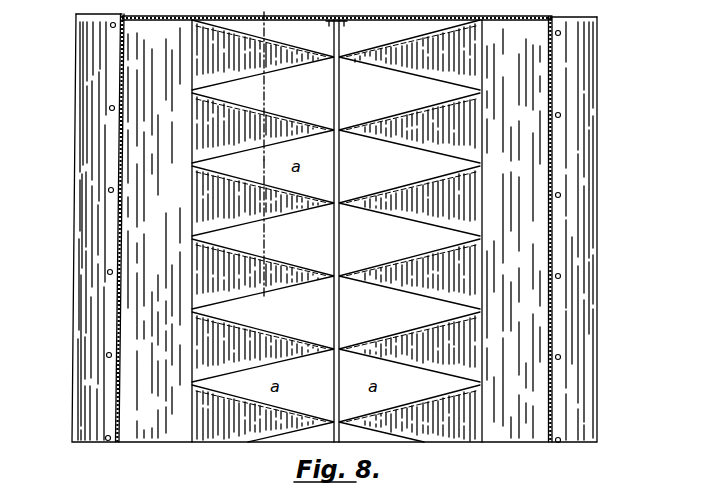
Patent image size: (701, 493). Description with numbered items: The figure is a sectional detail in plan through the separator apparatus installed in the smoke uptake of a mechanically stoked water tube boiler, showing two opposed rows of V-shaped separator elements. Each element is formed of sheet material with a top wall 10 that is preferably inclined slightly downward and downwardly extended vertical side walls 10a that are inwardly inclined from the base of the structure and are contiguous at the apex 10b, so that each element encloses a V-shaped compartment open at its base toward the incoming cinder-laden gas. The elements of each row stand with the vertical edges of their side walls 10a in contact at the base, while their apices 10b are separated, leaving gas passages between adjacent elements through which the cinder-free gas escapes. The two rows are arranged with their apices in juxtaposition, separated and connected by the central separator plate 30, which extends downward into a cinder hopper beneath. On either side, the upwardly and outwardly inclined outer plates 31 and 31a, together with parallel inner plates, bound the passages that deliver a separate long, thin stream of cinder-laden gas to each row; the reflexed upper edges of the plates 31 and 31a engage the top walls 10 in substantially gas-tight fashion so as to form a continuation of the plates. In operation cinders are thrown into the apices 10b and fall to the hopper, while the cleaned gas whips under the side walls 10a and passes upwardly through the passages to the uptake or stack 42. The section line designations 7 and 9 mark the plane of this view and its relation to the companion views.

The section line 7 is at (258, 80).
The section line 9 is at (256, 239).
The top wall 10 is at (405, 132).
The side walls 10a is at (380, 218).
The apex 10b is at (330, 341).
The separator plate 30 is at (334, 370).
The outer plate 31 is at (130, 352).
The outer plate 31a is at (593, 381).
The uptake or stack 42 is at (552, 233).